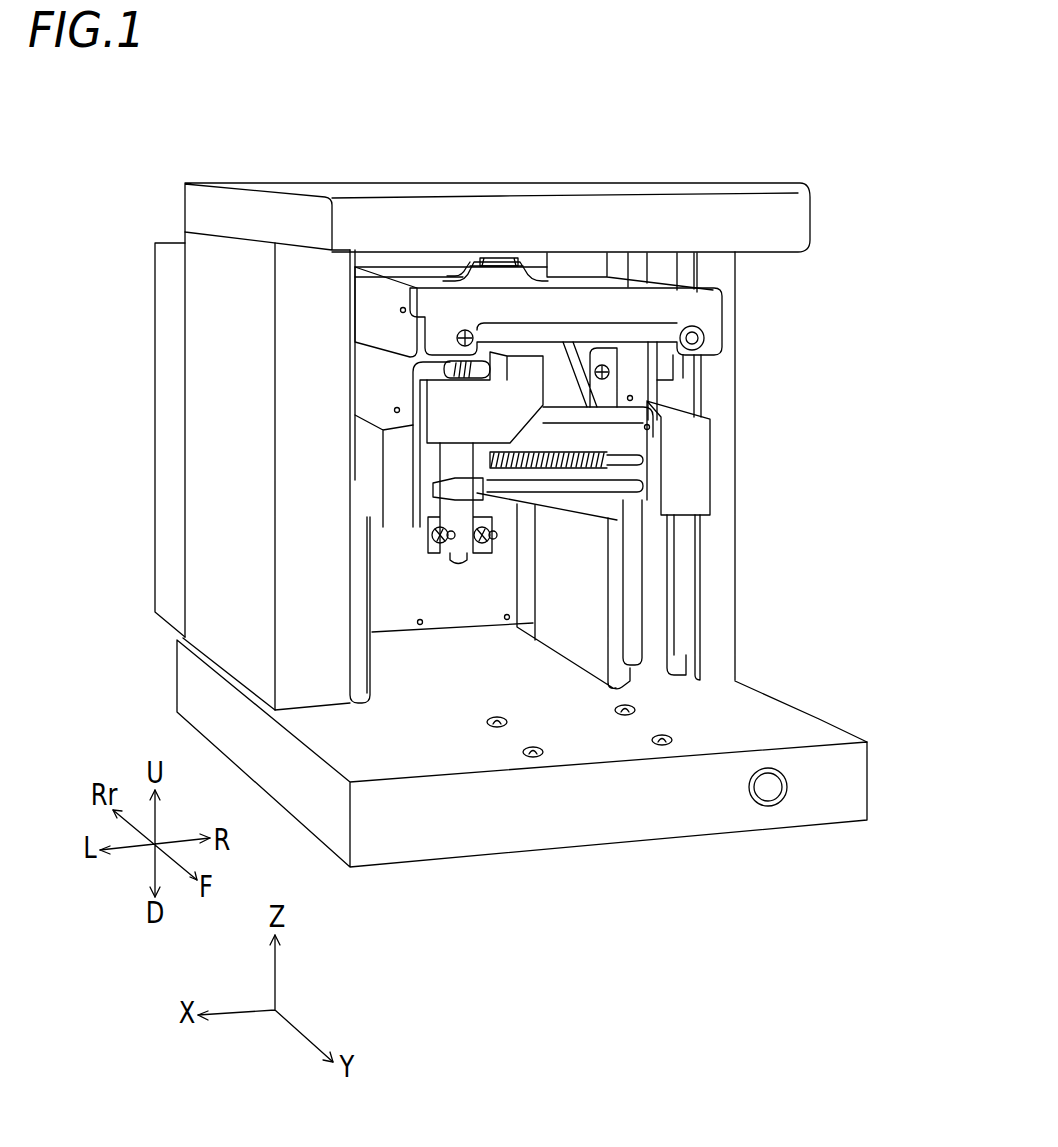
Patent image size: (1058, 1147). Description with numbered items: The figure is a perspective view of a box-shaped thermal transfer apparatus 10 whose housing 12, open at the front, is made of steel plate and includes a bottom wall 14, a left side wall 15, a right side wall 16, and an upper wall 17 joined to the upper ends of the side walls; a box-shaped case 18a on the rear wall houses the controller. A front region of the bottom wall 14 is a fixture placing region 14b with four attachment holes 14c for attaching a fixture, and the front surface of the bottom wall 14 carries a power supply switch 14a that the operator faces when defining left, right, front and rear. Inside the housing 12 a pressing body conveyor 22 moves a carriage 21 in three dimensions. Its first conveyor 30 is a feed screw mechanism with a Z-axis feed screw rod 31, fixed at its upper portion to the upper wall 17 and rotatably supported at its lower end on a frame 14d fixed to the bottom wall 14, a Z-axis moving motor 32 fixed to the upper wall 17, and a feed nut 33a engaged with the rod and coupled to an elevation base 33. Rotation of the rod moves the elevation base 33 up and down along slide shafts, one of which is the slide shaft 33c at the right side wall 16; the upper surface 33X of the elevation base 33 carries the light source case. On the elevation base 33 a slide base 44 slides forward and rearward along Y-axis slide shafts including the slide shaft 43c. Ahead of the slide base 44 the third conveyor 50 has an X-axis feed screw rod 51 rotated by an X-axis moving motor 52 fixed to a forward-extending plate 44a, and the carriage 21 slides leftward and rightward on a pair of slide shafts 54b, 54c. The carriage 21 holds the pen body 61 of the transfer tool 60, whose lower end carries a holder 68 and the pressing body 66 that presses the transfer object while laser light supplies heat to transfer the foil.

The thermal transfer apparatus 10 is at (797, 148).
The housing 12 is at (236, 181).
The bottom wall 14 is at (433, 823).
The power supply switch 14a is at (772, 795).
The fixture placing region 14b is at (749, 701).
The attachment holes 14c is at (660, 746).
The frame 14d is at (588, 589).
The left side wall 15 is at (196, 432).
The right side wall 16 is at (729, 587).
The upper wall 17 is at (358, 190).
The case 18a is at (153, 322).
The carriage 21 is at (433, 560).
The pressing body conveyor 22 is at (745, 329).
The first conveyor 30 is at (540, 263).
The Z-axis feed screw rod 31 is at (523, 265).
The Z-axis moving motor 32 is at (637, 273).
The elevation base 33 is at (424, 262).
The feed nut 33a is at (465, 268).
The slide shaft 33c is at (668, 274).
The upper surface of elevation base 33X is at (690, 269).
The slide shaft 43c is at (656, 346).
The slide base 44 is at (587, 325).
The plate 44a is at (661, 494).
The third conveyor 50 is at (762, 521).
The X-axis feed screw rod 51 is at (661, 468).
The X-axis moving motor 52 is at (710, 449).
The slide shaft 54b is at (649, 390).
The slide shaft 54c is at (647, 535).
The transfer tool 60 is at (466, 537).
The pen body 61 is at (421, 542).
The pressing body 66 is at (457, 565).
The holder 68 is at (444, 560).